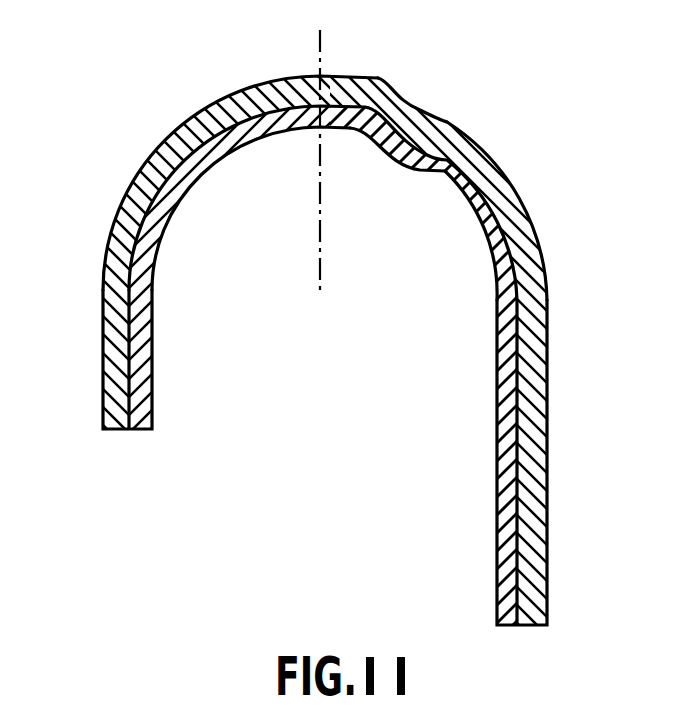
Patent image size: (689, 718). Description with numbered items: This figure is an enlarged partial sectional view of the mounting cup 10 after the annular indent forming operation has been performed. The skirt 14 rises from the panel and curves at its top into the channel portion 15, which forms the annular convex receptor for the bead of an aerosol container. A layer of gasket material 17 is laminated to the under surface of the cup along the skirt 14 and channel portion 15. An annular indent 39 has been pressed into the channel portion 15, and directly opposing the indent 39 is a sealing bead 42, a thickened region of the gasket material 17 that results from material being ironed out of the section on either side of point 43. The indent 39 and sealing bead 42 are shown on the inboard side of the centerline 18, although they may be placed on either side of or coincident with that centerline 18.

The mounting cup 10 is at (502, 150).
The skirt 14 is at (548, 407).
The channel portion 15 is at (206, 106).
The gasket material 17 is at (151, 383).
The centerline 18 is at (325, 68).
The annular indent 39 is at (424, 114).
The sealing bead 42 is at (415, 171).
The point 43 is at (495, 317).